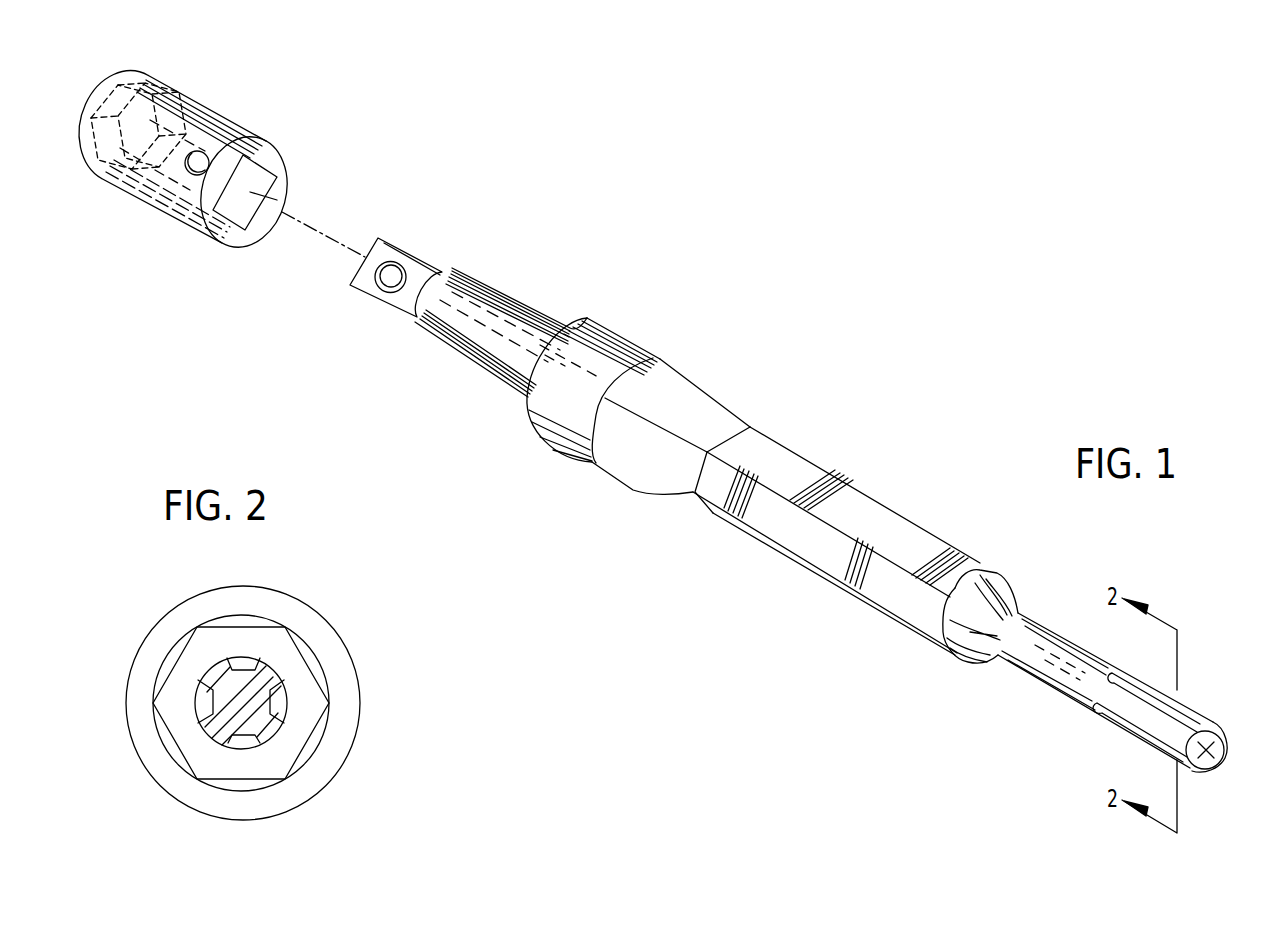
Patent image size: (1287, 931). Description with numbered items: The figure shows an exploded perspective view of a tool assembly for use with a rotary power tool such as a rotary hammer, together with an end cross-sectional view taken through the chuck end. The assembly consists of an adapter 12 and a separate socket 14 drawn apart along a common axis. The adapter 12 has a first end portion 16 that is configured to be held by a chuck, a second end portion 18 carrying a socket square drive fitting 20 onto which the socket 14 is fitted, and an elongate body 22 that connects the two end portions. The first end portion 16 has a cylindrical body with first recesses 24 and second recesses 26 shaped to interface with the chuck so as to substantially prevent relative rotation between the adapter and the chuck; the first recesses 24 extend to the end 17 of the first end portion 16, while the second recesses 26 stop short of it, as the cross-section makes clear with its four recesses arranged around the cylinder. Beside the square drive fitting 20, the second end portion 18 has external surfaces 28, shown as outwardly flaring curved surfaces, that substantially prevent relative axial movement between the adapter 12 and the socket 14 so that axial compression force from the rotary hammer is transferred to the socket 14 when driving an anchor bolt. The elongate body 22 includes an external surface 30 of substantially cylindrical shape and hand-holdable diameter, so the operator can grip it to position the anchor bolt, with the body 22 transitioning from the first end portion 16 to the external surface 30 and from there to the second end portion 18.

In FIG. 1, the adapter 12 is at (743, 398).
In FIG. 1, the socket 14 is at (222, 110).
In FIG. 1, the first end portion 16 is at (1108, 684).
In FIG. 1, the end 17 is at (1212, 750).
In FIG. 1, the second end portion 18 is at (463, 276).
In FIG. 1, the socket square drive fitting 20 is at (380, 295).
In FIG. 1, the elongate body 22 is at (648, 496).
In FIG. 1, the first recesses 24 is at (1188, 722).
In FIG. 2, the first recesses 24 is at (241, 653).
In FIG. 1, the second recesses 26 is at (1112, 718).
In FIG. 2, the second recesses 26 is at (282, 703).
In FIG. 1, the external surfaces 28 is at (456, 274).
In FIG. 1, the external surface 30 is at (587, 395).